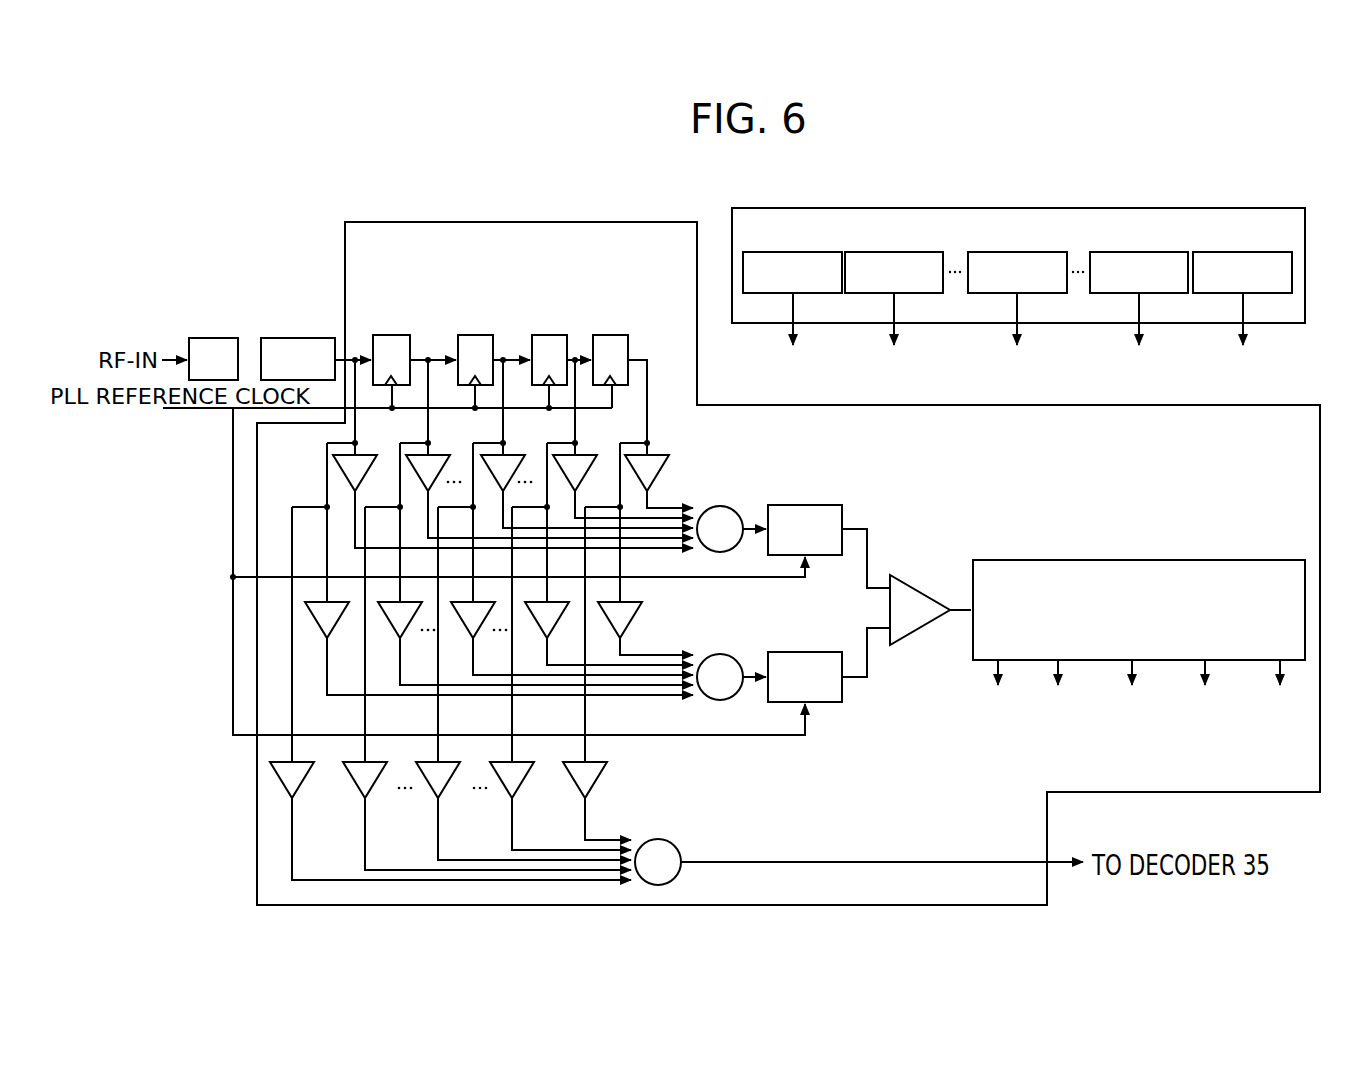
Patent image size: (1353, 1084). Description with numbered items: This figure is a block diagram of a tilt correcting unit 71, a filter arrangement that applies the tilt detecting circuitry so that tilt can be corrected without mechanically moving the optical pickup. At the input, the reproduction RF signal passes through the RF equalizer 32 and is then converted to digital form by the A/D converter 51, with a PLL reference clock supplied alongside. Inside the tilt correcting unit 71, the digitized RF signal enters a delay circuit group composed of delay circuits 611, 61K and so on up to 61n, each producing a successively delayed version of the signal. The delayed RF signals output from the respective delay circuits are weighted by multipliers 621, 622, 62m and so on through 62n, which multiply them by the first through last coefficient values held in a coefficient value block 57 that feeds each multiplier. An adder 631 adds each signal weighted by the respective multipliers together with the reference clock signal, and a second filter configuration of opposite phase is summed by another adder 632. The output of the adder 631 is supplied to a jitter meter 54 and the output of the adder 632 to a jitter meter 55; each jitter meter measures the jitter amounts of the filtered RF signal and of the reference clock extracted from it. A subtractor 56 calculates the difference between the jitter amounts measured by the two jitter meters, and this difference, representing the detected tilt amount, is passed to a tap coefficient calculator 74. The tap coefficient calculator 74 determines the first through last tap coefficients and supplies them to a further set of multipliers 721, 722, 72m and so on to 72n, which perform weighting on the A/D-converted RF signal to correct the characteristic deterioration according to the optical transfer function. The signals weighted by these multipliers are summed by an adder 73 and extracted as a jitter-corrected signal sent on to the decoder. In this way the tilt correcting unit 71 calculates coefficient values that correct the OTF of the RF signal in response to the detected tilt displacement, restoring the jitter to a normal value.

The RF equalizer 32 is at (213, 338).
The A/D converter 51 is at (298, 338).
The tilt correcting unit 71 is at (520, 222).
The delay circuit 611 is at (393, 335).
The delay circuit 61K is at (477, 335).
The delay circuit 61n is at (610, 335).
The coefficient value storage 57 is at (1018, 208).
The multiplier 621 is at (656, 456).
The multiplier 622 is at (584, 456).
The multiplier 62m is at (512, 456).
The multiplier 62n is at (364, 456).
The adder 631 is at (718, 506).
The adder 632 is at (717, 654).
The jitter meter 54 is at (806, 505).
The jitter meter 55 is at (806, 652).
The subtractor 56 is at (915, 585).
The tap coefficient calculator 74 is at (1140, 560).
The multiplier 721 is at (304, 777).
The multiplier 722 is at (377, 777).
The multiplier 72m is at (450, 777).
The multiplier 72n is at (597, 777).
The adder 73 is at (681, 849).